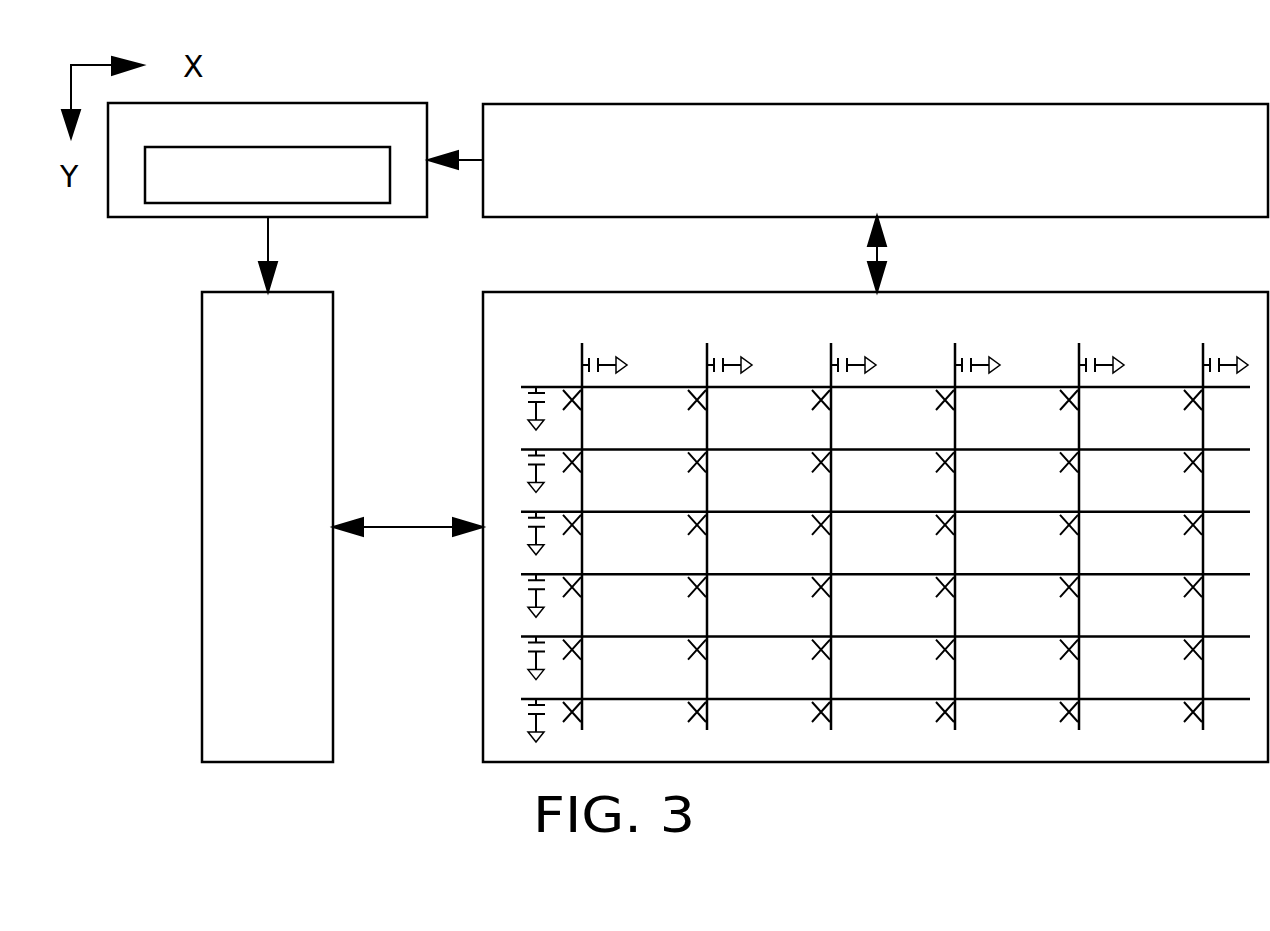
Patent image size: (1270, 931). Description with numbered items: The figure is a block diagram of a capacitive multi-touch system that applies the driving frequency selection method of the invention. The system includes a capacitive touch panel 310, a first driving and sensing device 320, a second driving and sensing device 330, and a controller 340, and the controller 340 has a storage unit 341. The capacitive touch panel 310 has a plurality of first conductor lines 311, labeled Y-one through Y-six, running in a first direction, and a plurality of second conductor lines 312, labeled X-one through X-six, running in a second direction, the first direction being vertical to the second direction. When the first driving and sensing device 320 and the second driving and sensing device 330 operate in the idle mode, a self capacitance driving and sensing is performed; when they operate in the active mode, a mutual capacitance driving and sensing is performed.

The capacitive touch panel 310 is at (602, 292).
The first conductor lines 311 is at (560, 388).
The second conductor lines 312 is at (1203, 343).
The first driving and sensing device 320 is at (333, 590).
The second driving and sensing device 330 is at (1022, 216).
The controller 340 is at (237, 218).
The storage unit 341 is at (267, 203).